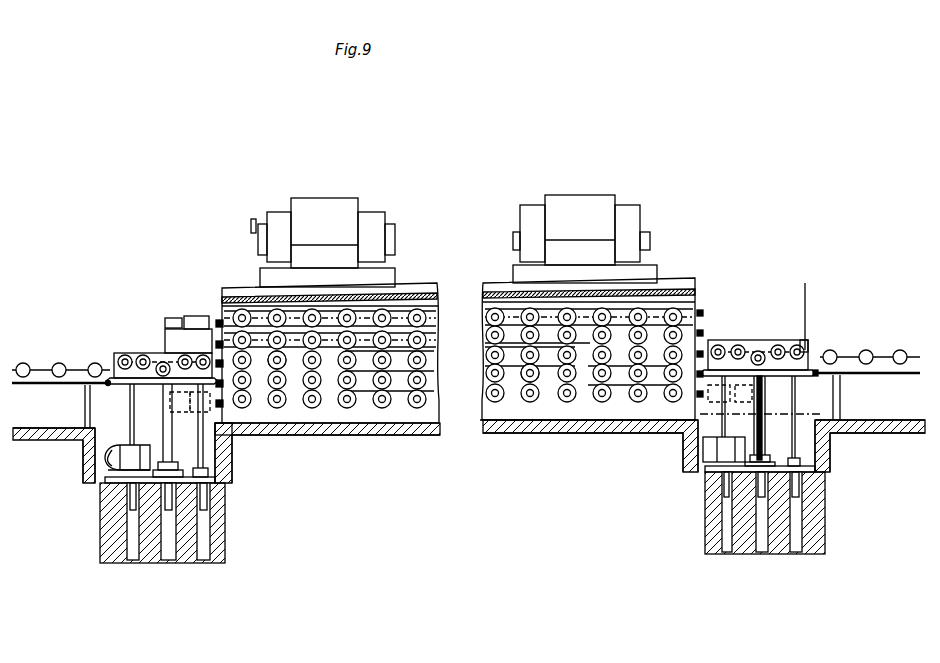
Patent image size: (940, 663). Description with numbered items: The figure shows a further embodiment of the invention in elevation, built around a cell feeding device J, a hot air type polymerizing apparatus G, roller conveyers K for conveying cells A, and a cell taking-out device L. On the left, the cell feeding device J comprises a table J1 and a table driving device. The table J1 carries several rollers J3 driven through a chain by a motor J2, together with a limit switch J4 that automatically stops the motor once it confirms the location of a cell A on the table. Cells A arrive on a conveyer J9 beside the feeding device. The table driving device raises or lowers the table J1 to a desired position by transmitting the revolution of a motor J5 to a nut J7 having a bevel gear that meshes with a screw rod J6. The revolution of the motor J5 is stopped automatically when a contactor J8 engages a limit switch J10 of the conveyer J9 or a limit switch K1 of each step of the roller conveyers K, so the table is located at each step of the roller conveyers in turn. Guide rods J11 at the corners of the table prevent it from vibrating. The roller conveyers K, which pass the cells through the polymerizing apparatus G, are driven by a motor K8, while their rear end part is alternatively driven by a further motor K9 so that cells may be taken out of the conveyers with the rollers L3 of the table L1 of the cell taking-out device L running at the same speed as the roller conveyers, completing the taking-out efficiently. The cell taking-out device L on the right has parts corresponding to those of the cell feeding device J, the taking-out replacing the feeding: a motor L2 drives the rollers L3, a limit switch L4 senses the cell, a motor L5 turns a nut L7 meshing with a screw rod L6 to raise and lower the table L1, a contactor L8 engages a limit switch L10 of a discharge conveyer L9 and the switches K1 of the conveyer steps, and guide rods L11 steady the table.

The hot air type polymerizing apparatus G is at (404, 298).
The roller conveyers K is at (523, 337).
The limit switch K1 is at (218, 380).
The motor K8 is at (200, 316).
The further motor K9 is at (700, 407).
The cell A is at (128, 357).
The cell feeding device J is at (157, 403).
The table J1 is at (132, 384).
The motor J2 is at (163, 360).
The rollers J3 is at (148, 357).
The limit switch J4 is at (210, 352).
The motor J5 is at (107, 483).
The screw rod J6 is at (172, 441).
The nut J7 is at (210, 502).
The contactor J8 is at (108, 375).
The conveyer J9 is at (42, 365).
The limit switch J10 is at (75, 435).
The guide rods J11 is at (203, 435).
The cell taking-out device L is at (772, 432).
The table L1 is at (797, 378).
The motor L2 is at (759, 350).
The rollers L3 is at (747, 342).
The limit switch L4 is at (799, 310).
The motor L5 is at (704, 472).
The screw rod L6 is at (762, 440).
The nut L7 is at (772, 468).
The contactor L8 is at (808, 370).
The conveyer L9 is at (883, 355).
The limit switch L10 is at (818, 370).
The guide rods L11 is at (797, 427).